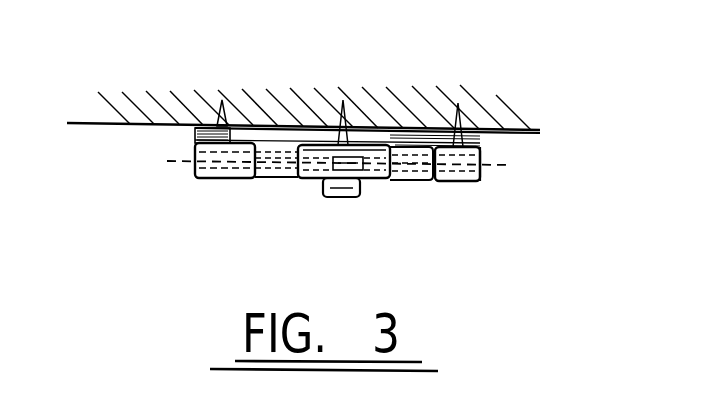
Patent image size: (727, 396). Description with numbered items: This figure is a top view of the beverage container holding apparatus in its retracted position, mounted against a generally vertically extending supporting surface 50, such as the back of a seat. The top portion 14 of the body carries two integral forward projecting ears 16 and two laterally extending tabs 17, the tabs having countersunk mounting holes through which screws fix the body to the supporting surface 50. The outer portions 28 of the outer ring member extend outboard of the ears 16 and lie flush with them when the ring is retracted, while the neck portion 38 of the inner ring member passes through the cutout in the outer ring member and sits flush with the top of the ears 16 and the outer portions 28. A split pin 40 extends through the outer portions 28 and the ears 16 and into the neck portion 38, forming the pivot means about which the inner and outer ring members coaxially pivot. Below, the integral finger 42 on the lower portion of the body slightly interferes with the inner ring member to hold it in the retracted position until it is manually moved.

The top portion 14 is at (427, 140).
The laterally extending tabs 17 is at (490, 130).
The supporting surface 50 is at (534, 132).
The split pin 40 is at (193, 143).
The outer portions 28 is at (212, 178).
The forward projecting ears 16 is at (277, 177).
The neck portion 38 is at (370, 178).
The finger 42 is at (326, 192).